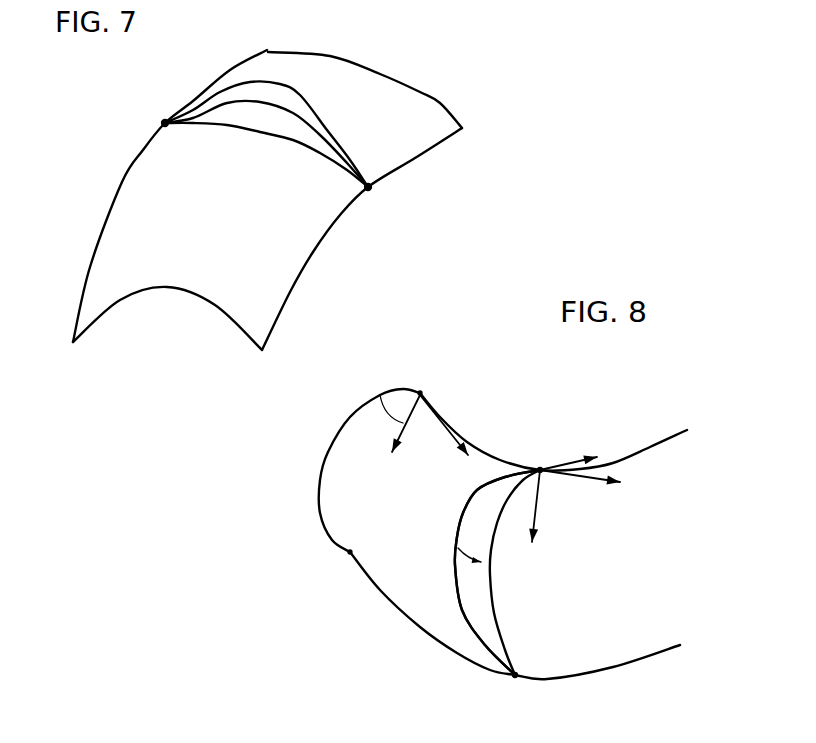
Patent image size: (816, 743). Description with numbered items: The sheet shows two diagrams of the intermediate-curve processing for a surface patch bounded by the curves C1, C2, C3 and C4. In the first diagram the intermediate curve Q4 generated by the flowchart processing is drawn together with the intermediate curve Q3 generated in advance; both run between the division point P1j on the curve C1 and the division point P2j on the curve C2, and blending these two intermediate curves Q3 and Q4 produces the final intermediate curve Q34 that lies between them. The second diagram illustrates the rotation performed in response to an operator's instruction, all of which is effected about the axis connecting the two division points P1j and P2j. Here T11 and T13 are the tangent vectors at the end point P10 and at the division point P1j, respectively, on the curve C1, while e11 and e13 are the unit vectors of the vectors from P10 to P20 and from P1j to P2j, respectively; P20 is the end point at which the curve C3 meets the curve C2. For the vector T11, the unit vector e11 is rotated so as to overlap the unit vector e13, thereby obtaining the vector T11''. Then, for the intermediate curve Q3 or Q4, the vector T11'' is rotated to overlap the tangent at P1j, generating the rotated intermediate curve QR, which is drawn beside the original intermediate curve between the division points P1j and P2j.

In FIG. 7, the curve C1 is at (122, 182).
In FIG. 8, the curve C1 is at (670, 435).
In FIG. 7, the curve C2 is at (313, 252).
In FIG. 8, the curve C2 is at (660, 655).
In FIG. 7, the boundary curve C3 is at (177, 288).
In FIG. 8, the boundary curve C3 is at (328, 450).
In FIG. 7, the boundary curve C4 is at (440, 103).
In FIG. 7, the division point P1j is at (165, 123).
In FIG. 8, the division point P1j is at (540, 470).
In FIG. 7, the division point P2j is at (368, 187).
In FIG. 8, the division point P2j is at (516, 677).
In FIG. 7, the intermediate curve Q3 is at (284, 84).
In FIG. 8, the intermediate curve Q3 is at (468, 625).
In FIG. 7, the final intermediate curve Q34 is at (320, 135).
In FIG. 7, the intermediate curve Q4 is at (338, 171).
In FIG. 8, the intermediate curve Q4 is at (466, 598).
In FIG. 8, the intermediate curve QR is at (495, 620).
In FIG. 8, the end point P10 is at (420, 393).
In FIG. 8, the end point P20 is at (350, 555).
In FIG. 8, the unit vector e11 is at (394, 406).
In FIG. 8, the unit vector e13 is at (540, 497).
In FIG. 8, the tangent vector T11 is at (461, 425).
In FIG. 8, the rotated tangent vector T11'' is at (580, 445).
In FIG. 8, the tangent vector T13 is at (613, 465).